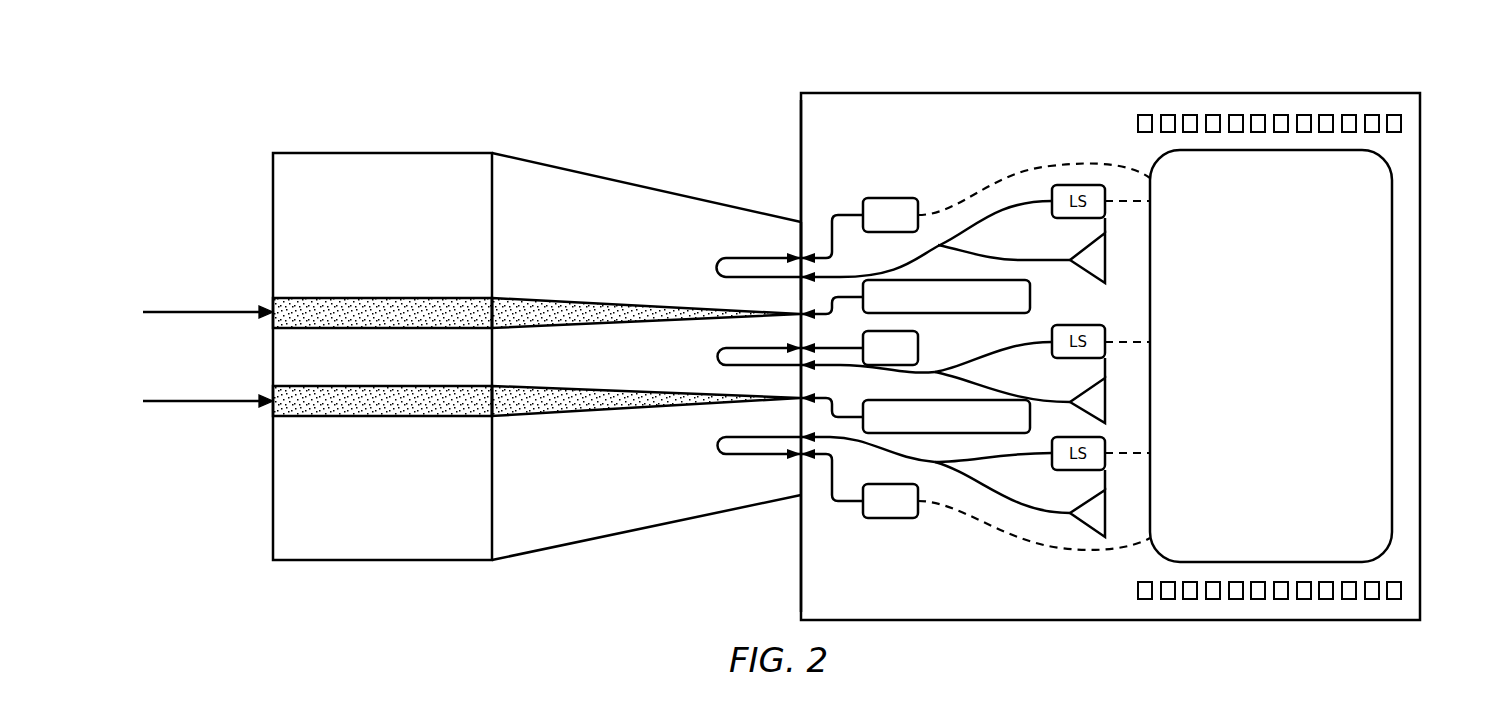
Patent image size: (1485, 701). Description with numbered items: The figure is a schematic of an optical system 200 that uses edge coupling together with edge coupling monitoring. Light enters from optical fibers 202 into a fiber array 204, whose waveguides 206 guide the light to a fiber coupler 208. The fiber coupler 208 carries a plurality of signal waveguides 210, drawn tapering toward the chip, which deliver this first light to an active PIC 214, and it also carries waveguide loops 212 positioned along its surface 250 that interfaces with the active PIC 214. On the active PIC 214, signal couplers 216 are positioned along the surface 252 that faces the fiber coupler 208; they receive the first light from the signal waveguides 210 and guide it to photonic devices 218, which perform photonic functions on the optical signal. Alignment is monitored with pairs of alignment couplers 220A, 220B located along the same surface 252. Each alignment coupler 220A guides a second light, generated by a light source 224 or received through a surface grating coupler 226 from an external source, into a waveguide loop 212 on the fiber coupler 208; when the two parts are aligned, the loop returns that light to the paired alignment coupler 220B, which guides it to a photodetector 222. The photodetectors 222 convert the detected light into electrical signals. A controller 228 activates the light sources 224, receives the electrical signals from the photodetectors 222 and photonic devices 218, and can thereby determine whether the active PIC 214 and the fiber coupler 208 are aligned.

The optical system 200 is at (196, 41).
The optical fibers 202 is at (205, 312).
The fiber array 204 is at (388, 153).
The waveguides 206 is at (388, 298).
The fiber coupler 208 is at (655, 189).
The signal waveguides 210 is at (552, 301).
The waveguide loops 212 is at (717, 267).
The active PIC 214 is at (1112, 93).
The signal couplers 216 is at (810, 319).
The photonic devices 218 is at (1030, 296).
The alignment coupler 220A is at (797, 279).
The alignment coupler 220B is at (797, 256).
The photodetectors 222 is at (893, 198).
The light sources 224 is at (1076, 220).
The surface grating couplers 226 is at (1105, 259).
The controller 228 is at (1271, 356).
The surface of fiber coupler 250 is at (801, 230).
The surface of active PIC 252 is at (801, 107).